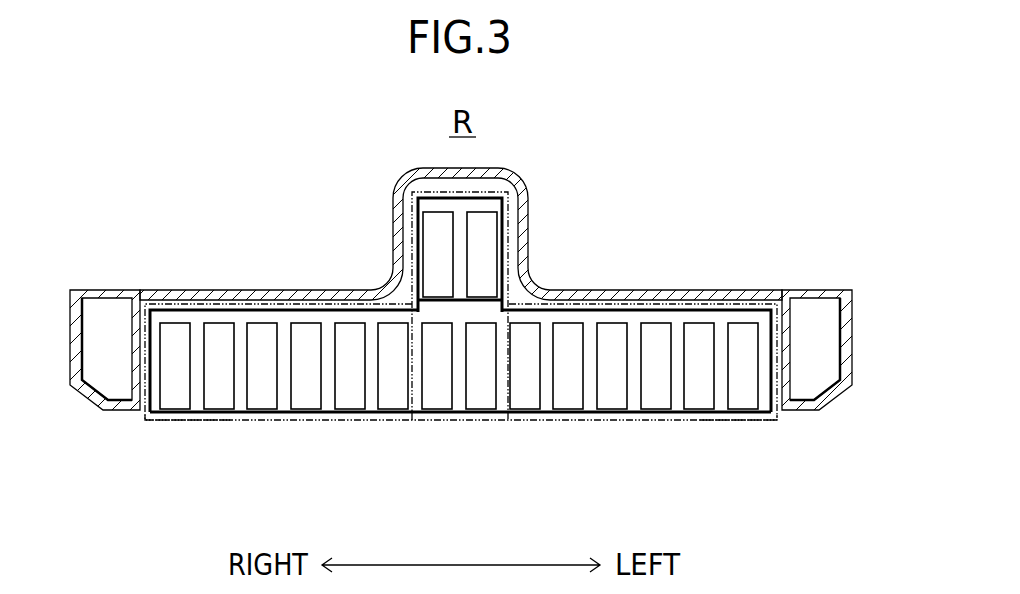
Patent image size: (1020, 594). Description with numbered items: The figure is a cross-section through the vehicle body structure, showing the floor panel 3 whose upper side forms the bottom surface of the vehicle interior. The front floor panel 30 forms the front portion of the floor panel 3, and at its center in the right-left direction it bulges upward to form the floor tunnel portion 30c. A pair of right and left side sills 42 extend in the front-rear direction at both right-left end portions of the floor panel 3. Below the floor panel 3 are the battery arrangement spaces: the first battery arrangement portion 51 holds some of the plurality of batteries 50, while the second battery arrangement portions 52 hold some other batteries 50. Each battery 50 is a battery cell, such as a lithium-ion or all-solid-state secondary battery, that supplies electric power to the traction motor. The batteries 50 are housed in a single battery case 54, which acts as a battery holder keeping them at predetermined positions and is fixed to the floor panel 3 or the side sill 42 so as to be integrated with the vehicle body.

The floor panel 3 is at (684, 289).
The front floor panel 30 is at (260, 290).
The floor tunnel portion 30c is at (507, 173).
The side sill 42 is at (103, 290).
The battery 50 is at (455, 253).
The first battery arrangement portion 51 is at (447, 423).
The second battery arrangement portion 52 is at (157, 423).
The battery case 54 is at (370, 418).